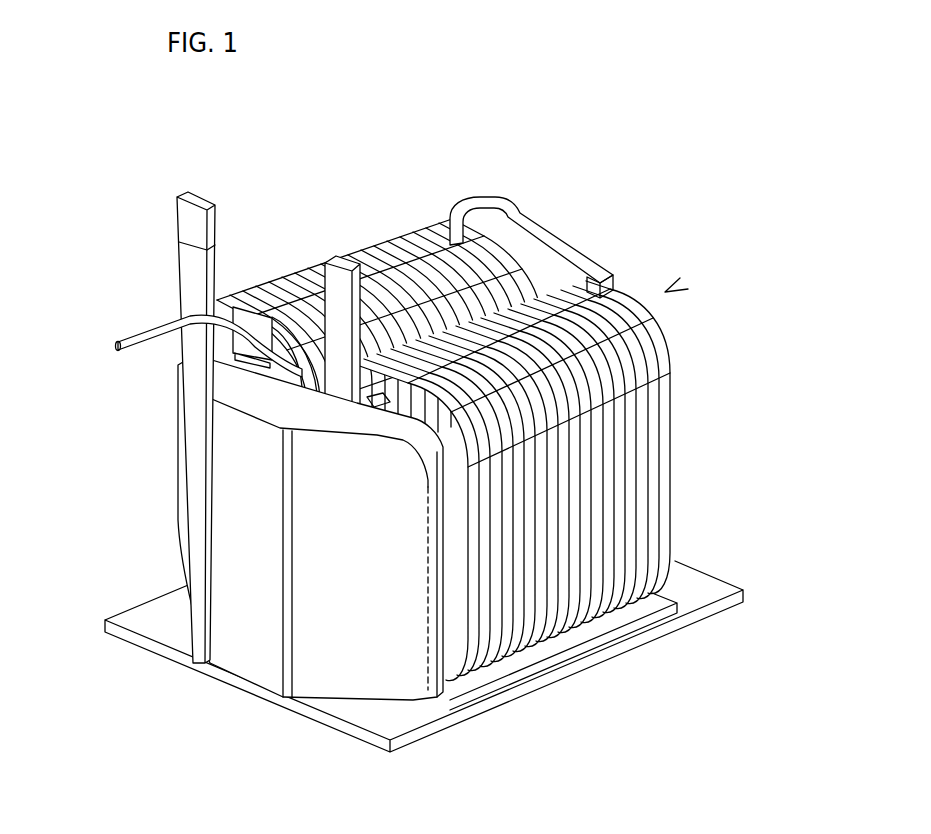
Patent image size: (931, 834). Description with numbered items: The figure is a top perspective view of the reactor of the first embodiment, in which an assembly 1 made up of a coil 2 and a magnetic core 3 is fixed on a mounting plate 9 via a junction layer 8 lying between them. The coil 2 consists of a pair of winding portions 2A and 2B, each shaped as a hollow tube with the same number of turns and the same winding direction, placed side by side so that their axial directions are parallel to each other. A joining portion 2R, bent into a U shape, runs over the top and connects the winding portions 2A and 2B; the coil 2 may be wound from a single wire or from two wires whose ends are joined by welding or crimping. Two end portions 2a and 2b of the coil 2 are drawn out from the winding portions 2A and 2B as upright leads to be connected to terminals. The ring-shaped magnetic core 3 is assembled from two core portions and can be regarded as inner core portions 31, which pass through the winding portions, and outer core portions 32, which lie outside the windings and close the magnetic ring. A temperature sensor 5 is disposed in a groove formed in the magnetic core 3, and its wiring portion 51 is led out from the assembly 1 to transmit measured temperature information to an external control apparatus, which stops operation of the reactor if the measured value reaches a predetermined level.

The assembly 1 is at (665, 292).
The coil 2 is at (514, 405).
The winding portion 2A is at (385, 240).
The winding portion 2B is at (668, 437).
The joining portion 2R is at (493, 208).
The end portion 2a is at (185, 222).
The end portion 2b is at (333, 269).
The magnetic core 3 is at (349, 561).
The inner core portion 31 is at (430, 543).
The outer core portion 32 is at (218, 512).
The temperature sensor 5 is at (166, 336).
The wiring portion 51 is at (157, 327).
The junction layer 8 is at (660, 607).
The mounting plate 9 is at (698, 617).